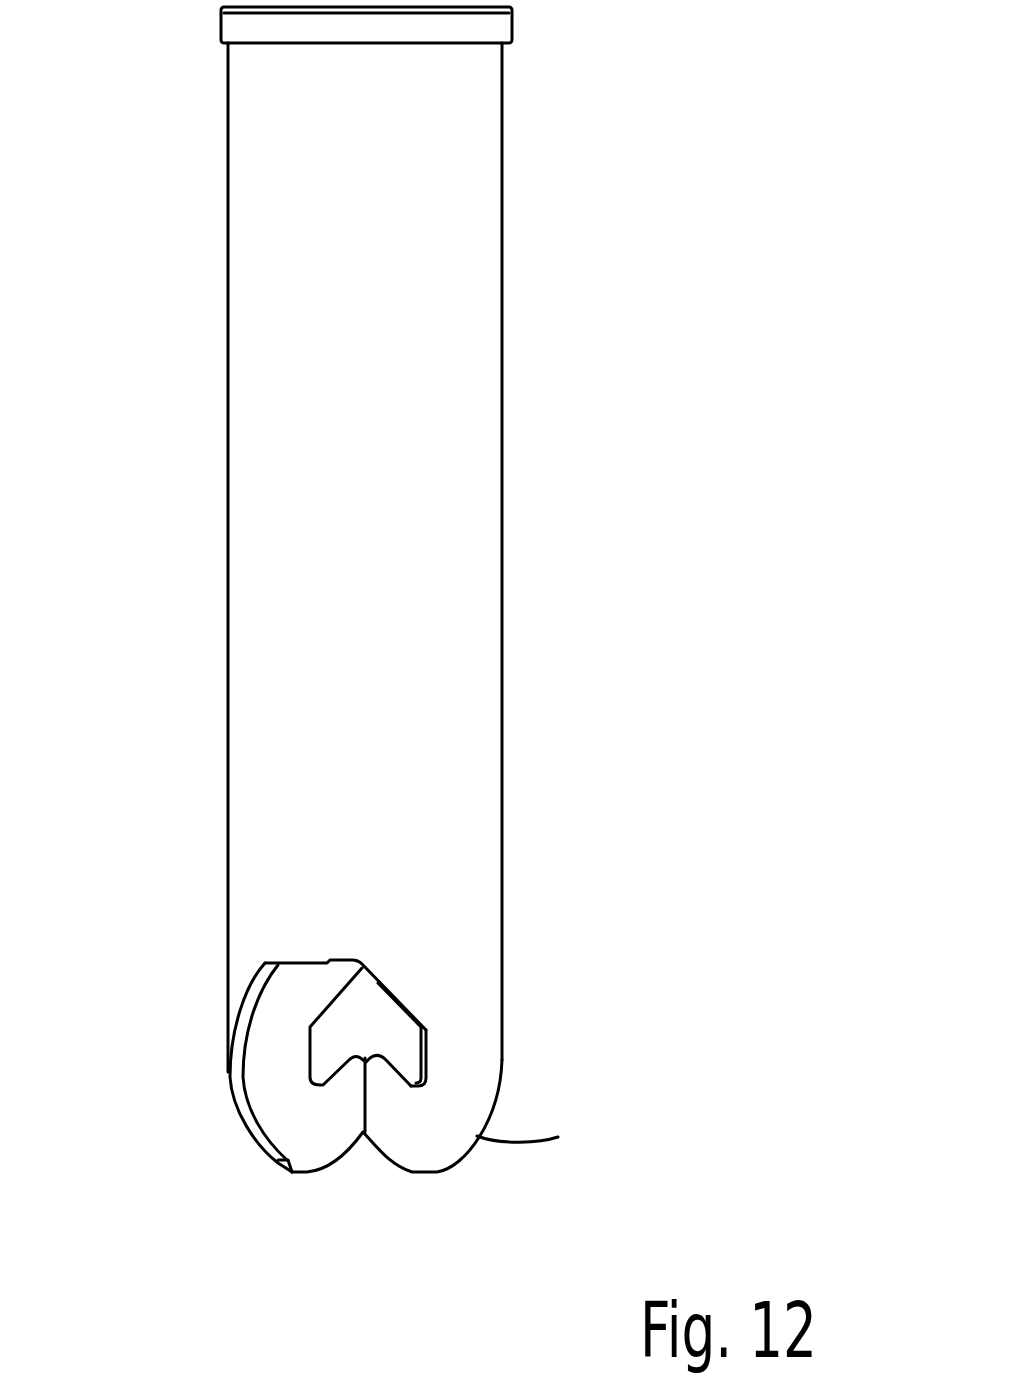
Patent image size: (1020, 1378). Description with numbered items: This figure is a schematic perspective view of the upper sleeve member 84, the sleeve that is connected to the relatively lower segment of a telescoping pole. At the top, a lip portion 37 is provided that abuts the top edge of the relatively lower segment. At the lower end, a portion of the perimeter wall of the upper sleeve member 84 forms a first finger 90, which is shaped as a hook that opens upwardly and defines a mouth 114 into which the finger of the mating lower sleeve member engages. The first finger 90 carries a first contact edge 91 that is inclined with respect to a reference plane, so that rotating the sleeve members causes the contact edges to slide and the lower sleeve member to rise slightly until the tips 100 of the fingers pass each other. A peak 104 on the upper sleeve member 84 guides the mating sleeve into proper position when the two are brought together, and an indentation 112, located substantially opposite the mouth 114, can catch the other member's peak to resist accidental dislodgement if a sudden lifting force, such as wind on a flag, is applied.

The lip portion 37 is at (513, 22).
The upper sleeve member 84 is at (453, 522).
The first finger 90 is at (398, 1118).
The first contact edge 91 is at (398, 1067).
The tip 100 is at (365, 1053).
The peak 104 is at (427, 1180).
The indentation 112 is at (345, 958).
The mouth 114 is at (388, 1030).